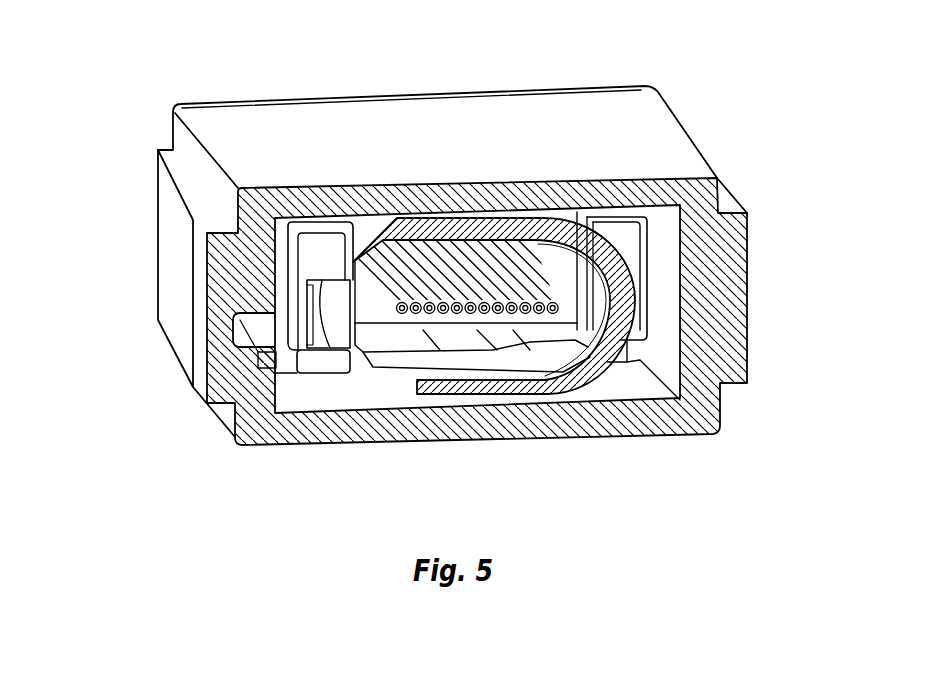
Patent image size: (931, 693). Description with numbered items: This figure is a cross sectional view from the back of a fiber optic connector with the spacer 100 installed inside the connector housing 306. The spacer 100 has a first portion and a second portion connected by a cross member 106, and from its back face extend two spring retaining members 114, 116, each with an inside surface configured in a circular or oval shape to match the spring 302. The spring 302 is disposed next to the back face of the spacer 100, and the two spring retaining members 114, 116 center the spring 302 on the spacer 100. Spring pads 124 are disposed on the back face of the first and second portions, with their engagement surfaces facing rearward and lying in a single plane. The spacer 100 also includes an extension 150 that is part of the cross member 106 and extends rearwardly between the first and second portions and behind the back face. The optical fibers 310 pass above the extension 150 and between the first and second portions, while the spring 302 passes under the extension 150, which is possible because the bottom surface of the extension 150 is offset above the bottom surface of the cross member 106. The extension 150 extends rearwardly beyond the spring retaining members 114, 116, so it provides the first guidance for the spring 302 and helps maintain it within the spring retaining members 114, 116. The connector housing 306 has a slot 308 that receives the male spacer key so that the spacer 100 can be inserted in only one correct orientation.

The spacer 100 is at (297, 333).
The cross member 106 is at (333, 367).
The spring retaining member 114 is at (313, 297).
The spring retaining member 116 is at (640, 300).
The spring pads 124 is at (345, 292).
The extension 150 is at (457, 367).
The spring 302 is at (535, 387).
The connector housing 306 is at (748, 268).
The slot 308 is at (290, 378).
The optical fibers 310 is at (500, 268).